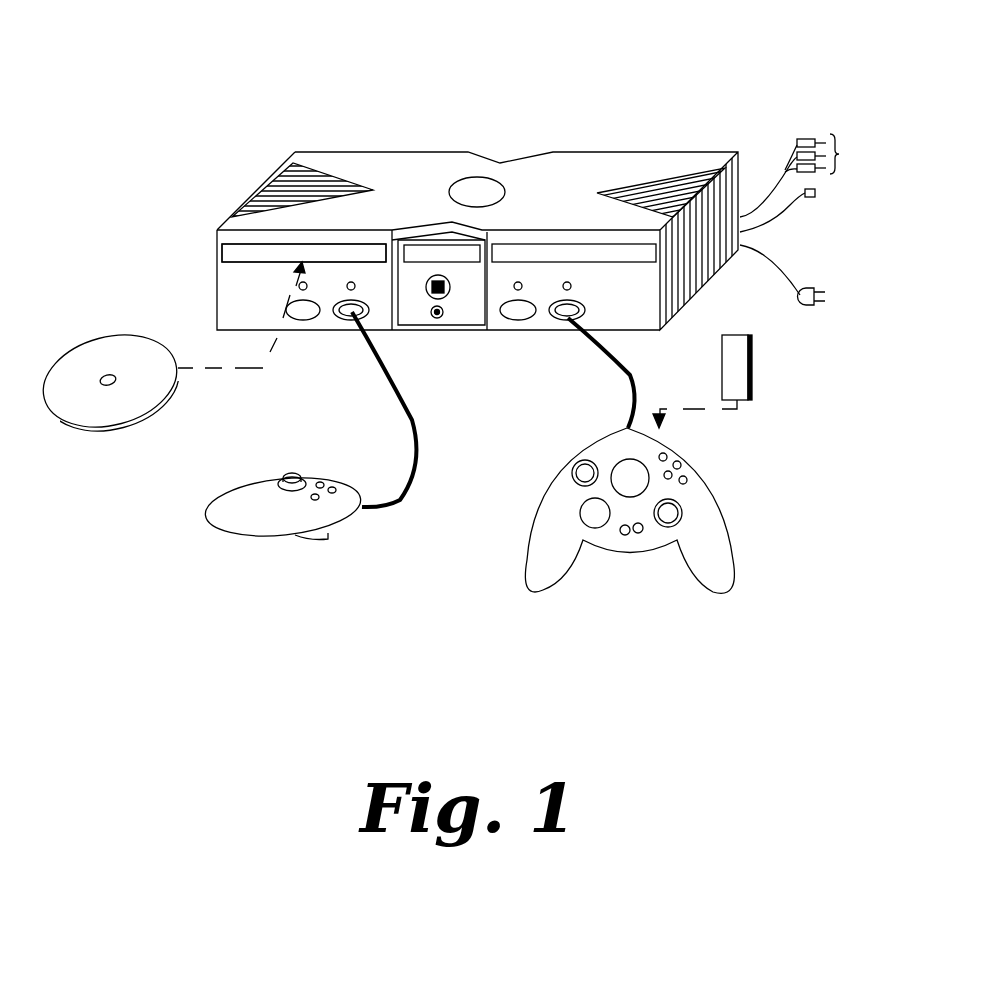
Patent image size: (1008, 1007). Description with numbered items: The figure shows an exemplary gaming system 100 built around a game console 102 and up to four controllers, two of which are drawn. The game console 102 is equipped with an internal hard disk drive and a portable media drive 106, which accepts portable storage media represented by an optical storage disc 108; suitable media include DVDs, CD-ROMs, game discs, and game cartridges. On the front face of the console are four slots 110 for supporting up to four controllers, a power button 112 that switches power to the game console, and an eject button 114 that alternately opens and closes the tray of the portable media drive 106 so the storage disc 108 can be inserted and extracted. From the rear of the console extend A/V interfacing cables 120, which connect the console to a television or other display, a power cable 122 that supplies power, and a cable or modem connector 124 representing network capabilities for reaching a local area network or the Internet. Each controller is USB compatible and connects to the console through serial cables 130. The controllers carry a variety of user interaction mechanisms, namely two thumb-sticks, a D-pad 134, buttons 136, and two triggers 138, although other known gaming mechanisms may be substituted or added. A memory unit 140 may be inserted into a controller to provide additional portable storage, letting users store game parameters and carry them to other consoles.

The gaming system 100 is at (628, 62).
The game console 102 is at (330, 150).
The portable media drive 106 is at (230, 252).
The optical storage disc 108 is at (120, 423).
The slots 110 is at (351, 320).
The power button 112 is at (440, 318).
The eject button 114 is at (438, 275).
The A/V interfacing cables 120 is at (807, 140).
The power cable 122 is at (806, 300).
The cable or modem connector 124 is at (777, 213).
The serial cables 130 is at (408, 417).
The D-pad 134 is at (580, 513).
The buttons 136 is at (680, 463).
The triggers 138 is at (332, 540).
The memory unit 140 is at (753, 366).